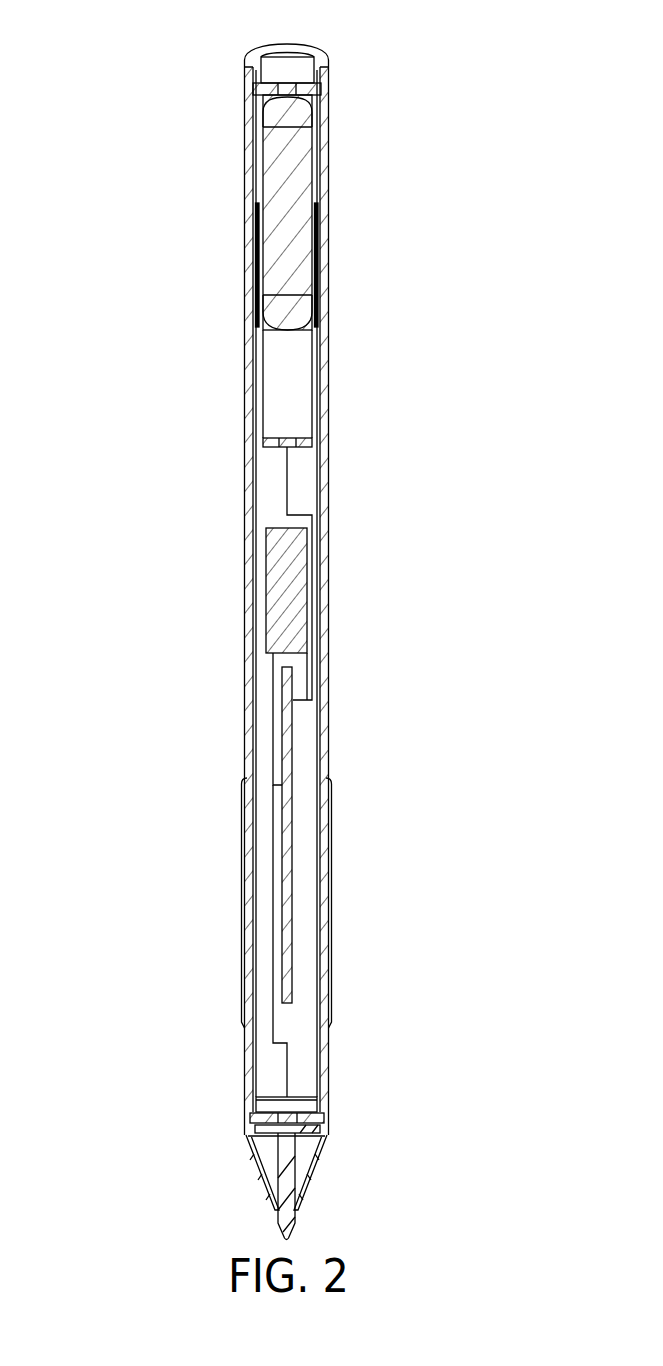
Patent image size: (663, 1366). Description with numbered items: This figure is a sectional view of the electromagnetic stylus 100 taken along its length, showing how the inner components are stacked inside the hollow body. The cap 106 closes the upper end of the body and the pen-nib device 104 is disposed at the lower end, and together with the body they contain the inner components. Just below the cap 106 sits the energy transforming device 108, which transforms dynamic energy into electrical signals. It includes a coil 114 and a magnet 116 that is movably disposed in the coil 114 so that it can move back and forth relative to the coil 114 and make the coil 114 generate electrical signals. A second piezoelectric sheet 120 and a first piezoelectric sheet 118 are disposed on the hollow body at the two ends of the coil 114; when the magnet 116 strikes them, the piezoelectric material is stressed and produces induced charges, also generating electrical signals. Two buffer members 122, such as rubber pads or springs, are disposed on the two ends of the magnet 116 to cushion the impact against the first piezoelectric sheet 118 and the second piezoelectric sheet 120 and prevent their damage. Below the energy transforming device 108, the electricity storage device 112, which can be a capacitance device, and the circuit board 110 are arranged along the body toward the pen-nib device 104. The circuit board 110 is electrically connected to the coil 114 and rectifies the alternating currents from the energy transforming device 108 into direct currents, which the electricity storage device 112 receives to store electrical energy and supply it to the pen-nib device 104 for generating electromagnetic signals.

The electromagnetic stylus 100 is at (153, 143).
The pen-nib device 104 is at (312, 1127).
The cap 106 is at (316, 46).
The energy transforming device 108 is at (405, 422).
The circuit board 110 is at (287, 767).
The electricity storage device 112 is at (307, 565).
The coil 114 is at (318, 250).
The magnet 116 is at (300, 184).
The first piezoelectric sheet 118 is at (307, 445).
The second piezoelectric sheet 120 is at (319, 90).
The buffer member 122 is at (298, 115).